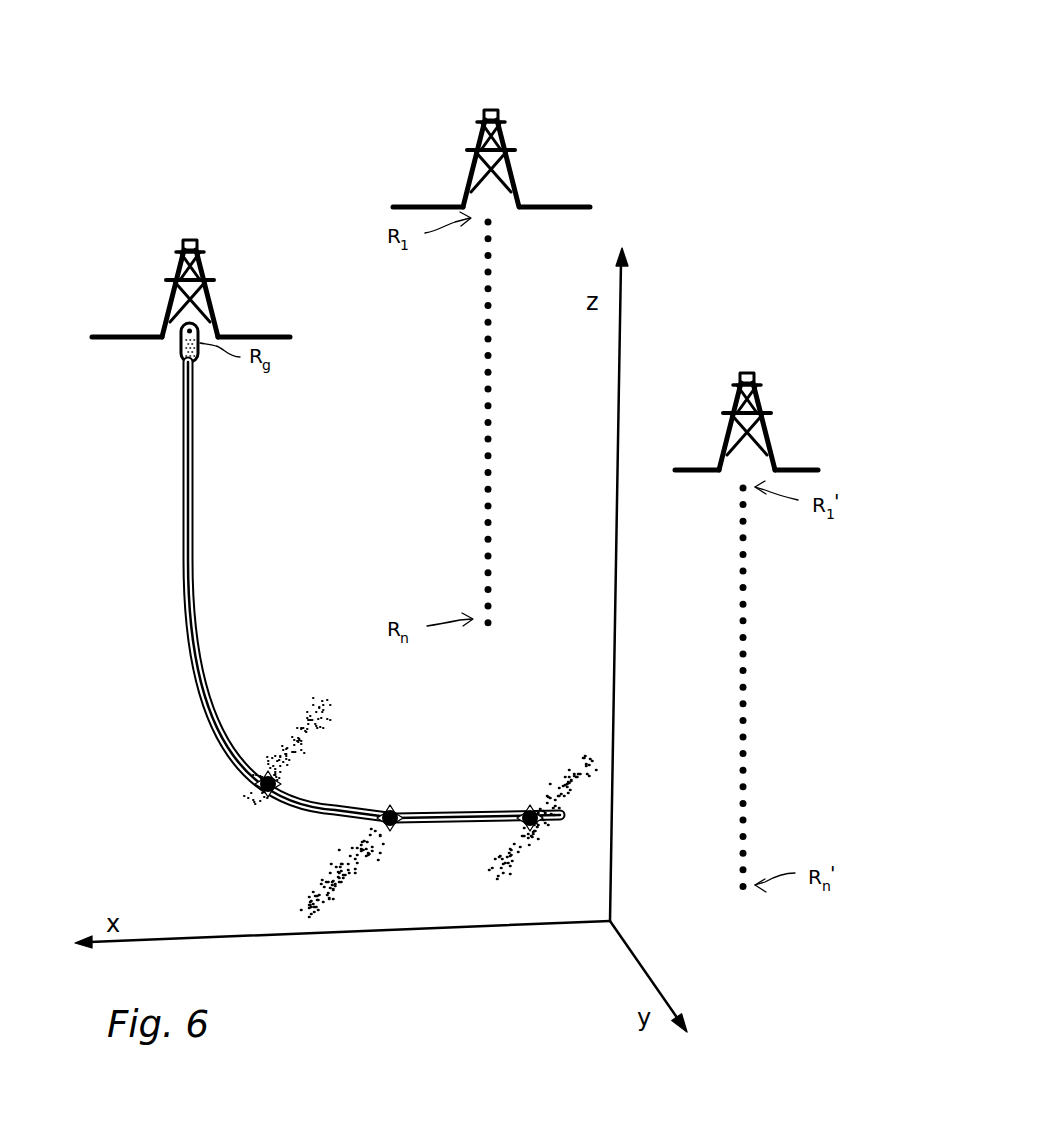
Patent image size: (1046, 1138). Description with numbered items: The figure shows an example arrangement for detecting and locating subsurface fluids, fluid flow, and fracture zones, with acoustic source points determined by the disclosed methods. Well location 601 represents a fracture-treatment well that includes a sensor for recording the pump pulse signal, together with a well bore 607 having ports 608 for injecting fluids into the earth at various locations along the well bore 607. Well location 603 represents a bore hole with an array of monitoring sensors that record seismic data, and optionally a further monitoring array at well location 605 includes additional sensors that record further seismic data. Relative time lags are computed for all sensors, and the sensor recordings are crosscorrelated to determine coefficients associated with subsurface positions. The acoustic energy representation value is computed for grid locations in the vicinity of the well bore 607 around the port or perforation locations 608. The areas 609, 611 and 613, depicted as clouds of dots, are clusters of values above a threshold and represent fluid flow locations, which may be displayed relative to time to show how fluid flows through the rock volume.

The well location 601 is at (183, 218).
The well location 603 is at (484, 88).
The well location 605 is at (738, 352).
The well bore 607 is at (199, 497).
The ports 608 is at (524, 808).
The area 609 is at (304, 707).
The area 611 is at (316, 862).
The area 613 is at (579, 758).